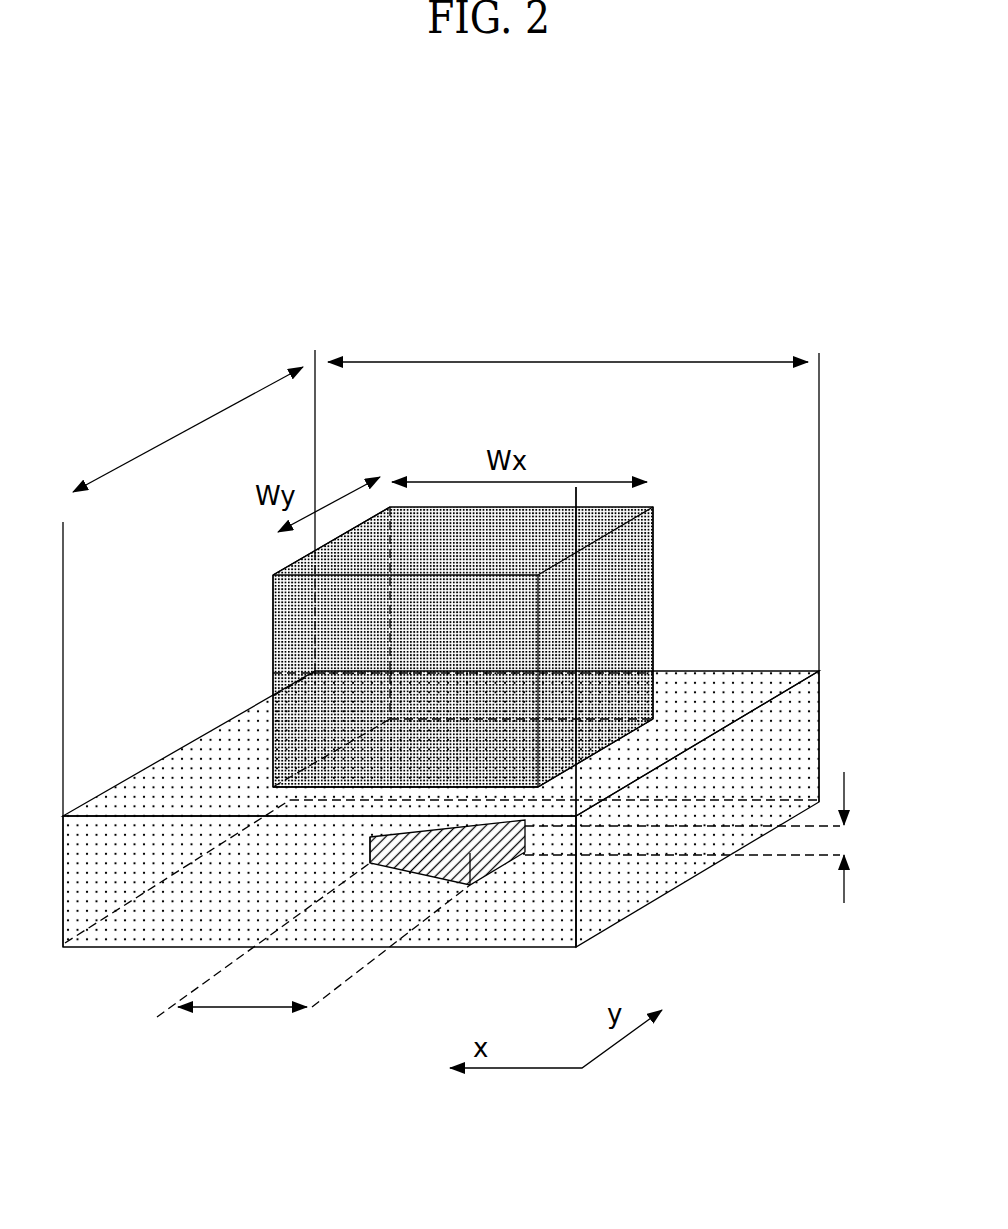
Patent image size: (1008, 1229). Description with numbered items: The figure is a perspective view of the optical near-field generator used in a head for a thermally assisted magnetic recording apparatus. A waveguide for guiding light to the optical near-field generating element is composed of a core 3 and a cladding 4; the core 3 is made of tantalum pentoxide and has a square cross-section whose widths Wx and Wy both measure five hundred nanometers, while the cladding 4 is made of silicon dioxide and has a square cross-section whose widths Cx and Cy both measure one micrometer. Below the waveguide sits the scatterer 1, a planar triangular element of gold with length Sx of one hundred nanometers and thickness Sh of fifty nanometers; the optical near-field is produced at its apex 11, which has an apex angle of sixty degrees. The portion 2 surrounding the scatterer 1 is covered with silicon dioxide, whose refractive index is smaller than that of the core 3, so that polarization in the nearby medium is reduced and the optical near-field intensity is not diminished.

The scatterer 1 is at (480, 858).
The surrounding portion 2 is at (108, 885).
The core 3 is at (625, 632).
The cladding 4 is at (755, 642).
The apex 11 is at (370, 863).